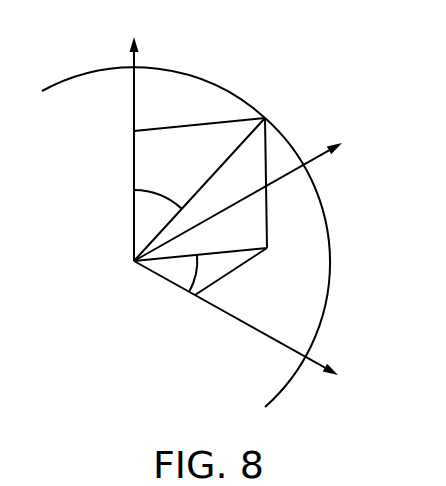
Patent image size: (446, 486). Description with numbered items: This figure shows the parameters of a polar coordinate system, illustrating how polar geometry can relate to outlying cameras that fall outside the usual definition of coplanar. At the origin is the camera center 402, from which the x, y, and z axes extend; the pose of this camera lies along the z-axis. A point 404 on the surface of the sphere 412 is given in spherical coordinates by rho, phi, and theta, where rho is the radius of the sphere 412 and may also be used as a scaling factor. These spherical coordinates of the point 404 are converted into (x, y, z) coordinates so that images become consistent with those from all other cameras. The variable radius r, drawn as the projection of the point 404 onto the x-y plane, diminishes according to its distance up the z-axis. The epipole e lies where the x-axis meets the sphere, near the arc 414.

The camera center 402 is at (133, 261).
The point 404 is at (263, 112).
The sphere 412 is at (79, 85).
The spherical surface lower arc 414 is at (297, 357).